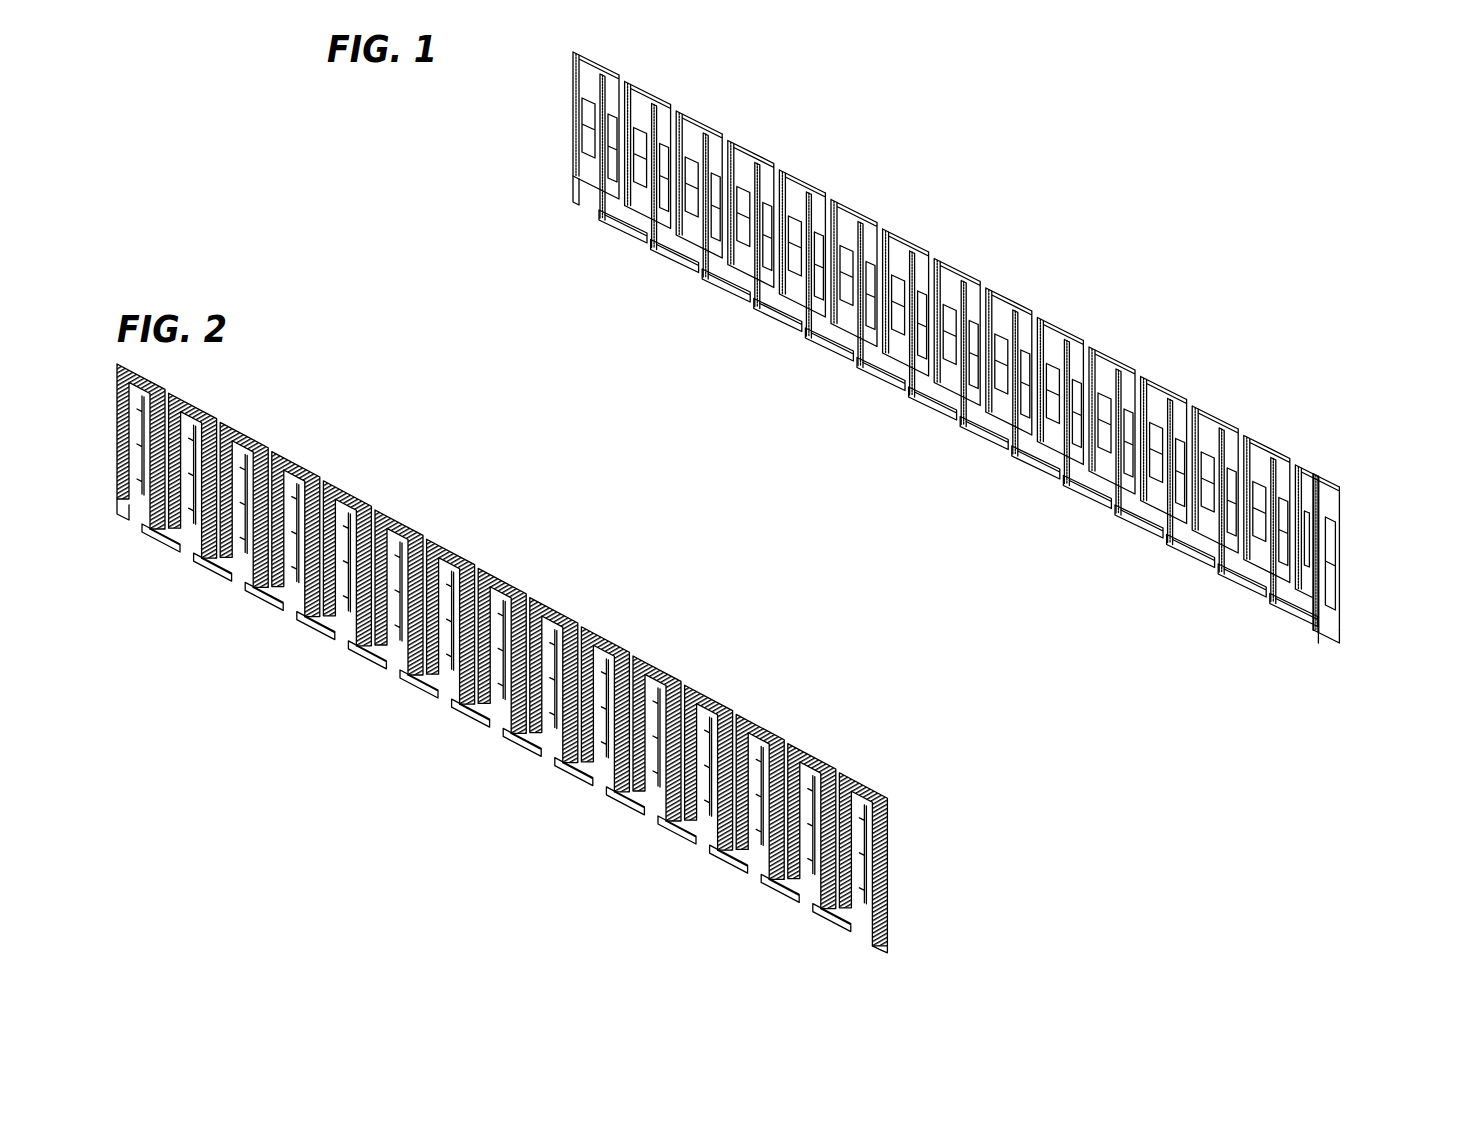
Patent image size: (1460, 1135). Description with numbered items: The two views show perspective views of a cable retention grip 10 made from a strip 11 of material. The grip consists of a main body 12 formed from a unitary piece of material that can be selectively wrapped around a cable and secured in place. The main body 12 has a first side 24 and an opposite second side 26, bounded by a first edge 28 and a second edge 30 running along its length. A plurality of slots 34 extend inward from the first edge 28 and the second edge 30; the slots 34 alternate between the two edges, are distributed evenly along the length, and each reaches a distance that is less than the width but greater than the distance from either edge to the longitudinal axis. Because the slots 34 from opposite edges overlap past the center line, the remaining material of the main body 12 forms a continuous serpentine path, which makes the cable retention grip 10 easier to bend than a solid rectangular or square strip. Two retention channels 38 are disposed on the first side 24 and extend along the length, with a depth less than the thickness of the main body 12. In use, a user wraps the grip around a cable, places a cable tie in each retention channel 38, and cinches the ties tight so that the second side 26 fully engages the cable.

In FIG. 1, the cable retention grip 10 is at (986, 338).
In FIG. 2, the cable retention grip 10 is at (539, 658).
In FIG. 1, the strip 11 is at (1342, 545).
In FIG. 2, the strip 11 is at (882, 857).
In FIG. 1, the main body 12 is at (1060, 326).
In FIG. 2, the main body 12 is at (690, 690).
In FIG. 1, the first side 24 is at (1263, 455).
In FIG. 2, the second side 26 is at (800, 760).
In FIG. 1, the first edge 28 is at (1028, 470).
In FIG. 2, the first edge 28 is at (553, 606).
In FIG. 1, the second edge 30 is at (917, 240).
In FIG. 2, the second edge 30 is at (625, 800).
In FIG. 1, the slots 34 is at (600, 215).
In FIG. 2, the slots 34 is at (237, 585).
In FIG. 1, the retention channels 38 is at (588, 86).
In FIG. 2, the retention channels 38 is at (116, 477).